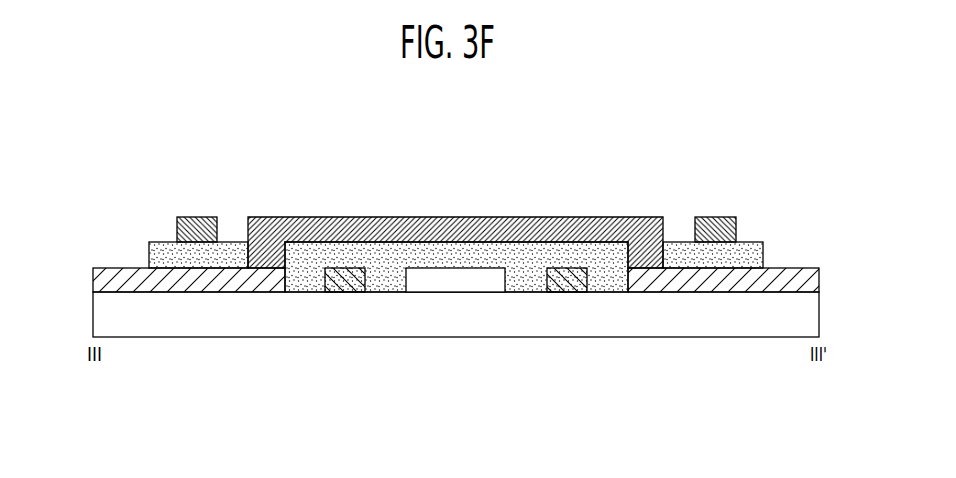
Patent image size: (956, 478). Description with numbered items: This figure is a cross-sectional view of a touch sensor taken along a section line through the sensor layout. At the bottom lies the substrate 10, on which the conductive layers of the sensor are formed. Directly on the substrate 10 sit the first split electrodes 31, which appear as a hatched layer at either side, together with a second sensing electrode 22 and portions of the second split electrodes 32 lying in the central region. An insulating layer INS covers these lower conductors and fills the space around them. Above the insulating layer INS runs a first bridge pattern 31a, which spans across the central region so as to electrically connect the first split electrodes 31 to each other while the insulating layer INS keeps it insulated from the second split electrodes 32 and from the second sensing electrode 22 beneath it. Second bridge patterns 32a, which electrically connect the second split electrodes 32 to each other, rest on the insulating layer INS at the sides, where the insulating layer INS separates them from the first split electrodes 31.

The substrate 10 is at (100, 318).
The first split electrodes 31 is at (100, 278).
The first bridge patterns 31a is at (307, 217).
The second split electrodes 32 is at (345, 284).
The second bridge patterns 32a is at (201, 217).
The second sensing electrodes 22 is at (460, 284).
The insulating layer INS is at (151, 250).